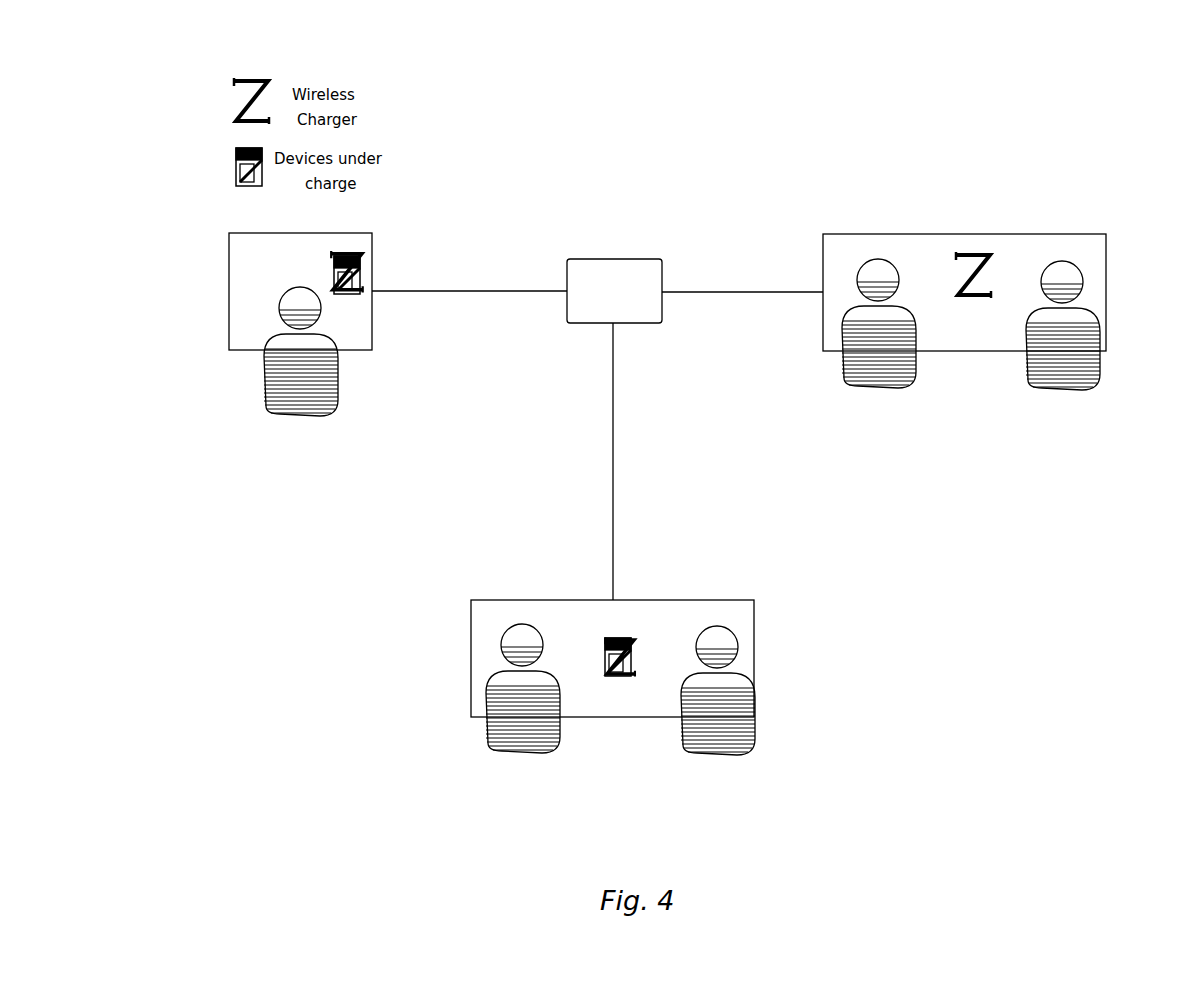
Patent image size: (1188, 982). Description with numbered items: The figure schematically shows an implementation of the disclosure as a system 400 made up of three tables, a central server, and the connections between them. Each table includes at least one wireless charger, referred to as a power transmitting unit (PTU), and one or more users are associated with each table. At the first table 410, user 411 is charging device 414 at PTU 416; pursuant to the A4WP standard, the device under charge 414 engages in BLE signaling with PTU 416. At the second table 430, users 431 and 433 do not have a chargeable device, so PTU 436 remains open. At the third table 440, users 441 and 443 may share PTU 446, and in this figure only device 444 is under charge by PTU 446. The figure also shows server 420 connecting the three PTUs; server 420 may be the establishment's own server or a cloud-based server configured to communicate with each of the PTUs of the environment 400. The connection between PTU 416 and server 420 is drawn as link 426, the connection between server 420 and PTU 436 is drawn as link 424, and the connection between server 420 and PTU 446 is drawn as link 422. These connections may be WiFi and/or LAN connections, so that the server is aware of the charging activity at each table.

The system 400 is at (1090, 97).
The table 410 is at (228, 265).
The user 411 is at (266, 370).
The device 414 is at (352, 281).
The PTU 416 is at (351, 252).
The server 420 is at (612, 258).
The link 422 is at (627, 461).
The link 424 is at (742, 286).
The link 426 is at (469, 284).
The table 430 is at (1107, 269).
The user 431 is at (854, 366).
The user 433 is at (1078, 386).
The PTU 436 is at (967, 250).
The table 440 is at (755, 625).
The user 441 is at (505, 733).
The user 443 is at (730, 735).
The device 444 is at (603, 663).
The PTU 446 is at (644, 634).